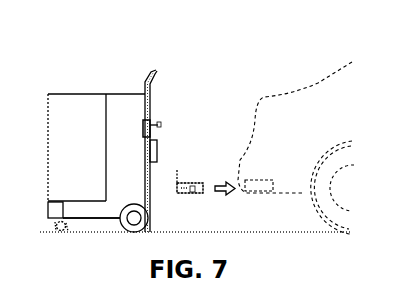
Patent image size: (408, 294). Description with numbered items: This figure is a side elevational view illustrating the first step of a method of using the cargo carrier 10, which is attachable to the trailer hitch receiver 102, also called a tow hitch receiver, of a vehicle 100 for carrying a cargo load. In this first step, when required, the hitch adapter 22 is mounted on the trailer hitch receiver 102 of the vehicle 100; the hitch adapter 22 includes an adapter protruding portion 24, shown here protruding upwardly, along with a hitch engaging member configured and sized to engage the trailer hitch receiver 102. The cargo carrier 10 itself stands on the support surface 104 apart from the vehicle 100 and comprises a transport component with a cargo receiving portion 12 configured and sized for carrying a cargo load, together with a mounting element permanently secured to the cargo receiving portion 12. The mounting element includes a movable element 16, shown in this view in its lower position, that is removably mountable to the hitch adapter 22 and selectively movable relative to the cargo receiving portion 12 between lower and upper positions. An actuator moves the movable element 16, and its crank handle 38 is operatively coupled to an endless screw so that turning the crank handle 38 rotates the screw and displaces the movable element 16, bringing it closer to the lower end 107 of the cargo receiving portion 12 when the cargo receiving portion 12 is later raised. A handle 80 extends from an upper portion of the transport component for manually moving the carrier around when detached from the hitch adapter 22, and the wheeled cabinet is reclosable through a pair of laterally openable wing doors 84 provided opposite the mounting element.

The cargo carrier 10 is at (97, 72).
The cargo receiving portion 12 is at (88, 220).
The movable element 16 is at (145, 148).
The hitch adapter 22 is at (199, 194).
The adapter protruding portion 24 is at (178, 172).
The crank handle 38 is at (160, 125).
The handle 80 is at (156, 71).
The laterally openable wing doors 84 is at (83, 158).
The vehicle 100 is at (318, 83).
The trailer hitch receiver 102 is at (263, 182).
The support surface 104 is at (303, 233).
The lower end 107 is at (98, 218).